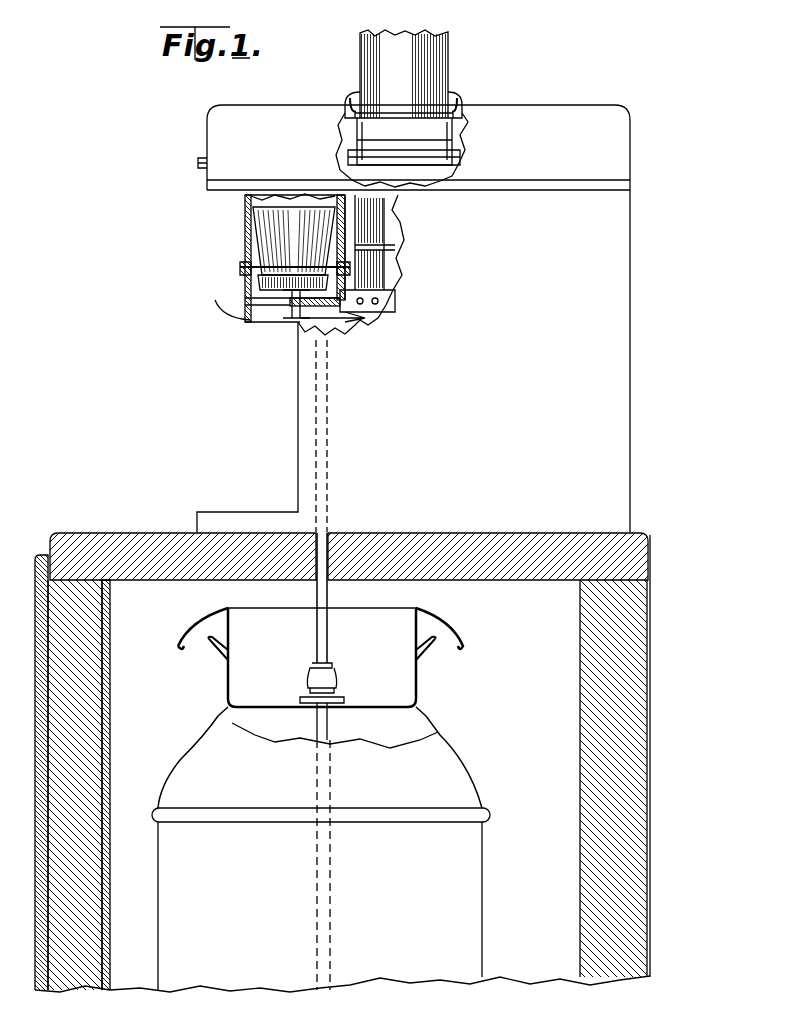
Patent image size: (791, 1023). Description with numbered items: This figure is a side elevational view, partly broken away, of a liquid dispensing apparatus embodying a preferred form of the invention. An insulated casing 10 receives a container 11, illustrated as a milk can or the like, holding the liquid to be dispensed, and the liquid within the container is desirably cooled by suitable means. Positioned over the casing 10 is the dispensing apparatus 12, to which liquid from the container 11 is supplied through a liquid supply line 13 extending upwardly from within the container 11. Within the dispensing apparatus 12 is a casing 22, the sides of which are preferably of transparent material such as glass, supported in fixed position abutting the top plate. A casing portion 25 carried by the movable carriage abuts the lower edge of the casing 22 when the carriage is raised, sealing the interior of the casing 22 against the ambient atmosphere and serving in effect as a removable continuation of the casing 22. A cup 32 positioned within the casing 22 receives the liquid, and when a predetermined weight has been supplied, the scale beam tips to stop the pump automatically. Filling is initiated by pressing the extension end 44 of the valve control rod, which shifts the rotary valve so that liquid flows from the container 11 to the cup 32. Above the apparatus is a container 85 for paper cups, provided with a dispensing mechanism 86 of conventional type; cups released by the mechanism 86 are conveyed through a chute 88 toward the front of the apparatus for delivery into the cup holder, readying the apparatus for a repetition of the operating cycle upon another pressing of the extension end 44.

The casing 10 is at (640, 650).
The container 11 is at (468, 770).
The dispensing apparatus 12 is at (640, 365).
The liquid supply line 13 is at (328, 598).
The casing 22 is at (245, 222).
The casing portion 25 is at (245, 280).
The cup 32 is at (268, 238).
The extension end 44 is at (190, 153).
The container for paper cups 85 is at (448, 57).
The dispensing mechanism 86 is at (430, 160).
The chute 88 is at (384, 270).